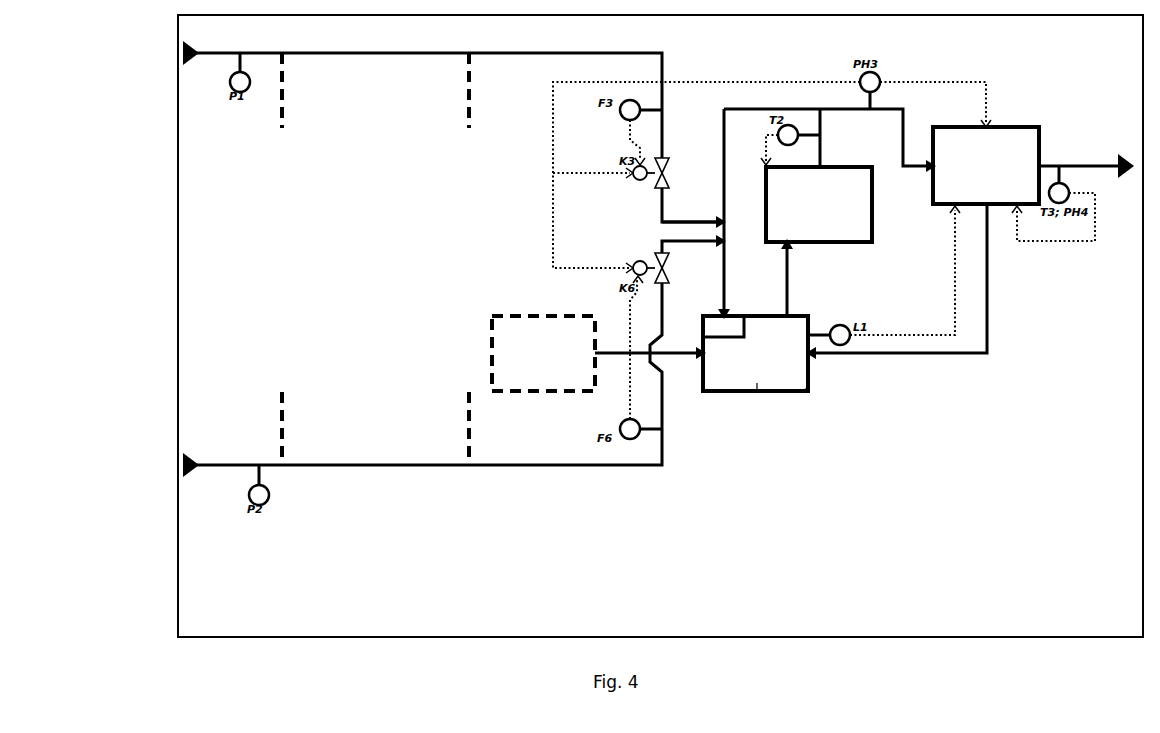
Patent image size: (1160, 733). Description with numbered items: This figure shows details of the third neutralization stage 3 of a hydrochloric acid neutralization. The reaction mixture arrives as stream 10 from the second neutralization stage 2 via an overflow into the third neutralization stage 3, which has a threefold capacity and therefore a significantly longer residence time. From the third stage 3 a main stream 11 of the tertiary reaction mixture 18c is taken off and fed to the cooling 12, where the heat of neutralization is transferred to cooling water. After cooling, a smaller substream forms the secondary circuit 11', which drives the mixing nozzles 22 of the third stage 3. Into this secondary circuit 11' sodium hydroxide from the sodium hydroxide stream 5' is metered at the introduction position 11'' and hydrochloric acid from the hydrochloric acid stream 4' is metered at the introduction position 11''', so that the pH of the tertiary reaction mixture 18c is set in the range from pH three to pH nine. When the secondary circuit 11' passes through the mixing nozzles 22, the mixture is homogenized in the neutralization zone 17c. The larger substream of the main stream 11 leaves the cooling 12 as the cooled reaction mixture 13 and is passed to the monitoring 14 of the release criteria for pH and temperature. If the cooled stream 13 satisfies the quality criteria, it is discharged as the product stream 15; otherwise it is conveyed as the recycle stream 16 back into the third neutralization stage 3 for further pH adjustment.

The second neutralization stage 2 is at (543, 353).
The third neutralization stage 3 is at (755, 363).
The hydrochloric acid stream 4' is at (454, 134).
The sodium hydroxide stream 5' is at (422, 383).
The reaction mixture exiting from the second stage 10 is at (650, 359).
The reaction mixture exiting from the third stage 11 is at (794, 277).
The secondary circuit 11' is at (732, 214).
The introduction of sodium hydroxide 11'' is at (683, 245).
The introduction of hydrochloric acid 11''' is at (675, 214).
The cooling of the third neutralization stage 12 is at (819, 204).
The cooled reaction mixture of the third stage 13 is at (830, 146).
The monitoring of the release criteria 14 is at (986, 165).
The discharged product stream 15 is at (1086, 165).
The recirculated reaction mixture 16 is at (896, 287).
The neutralization zone of the third stage 17c is at (808, 391).
The tertiary reaction mixture 18c is at (757, 383).
The mixing nozzles of the third stage 22 is at (723, 326).